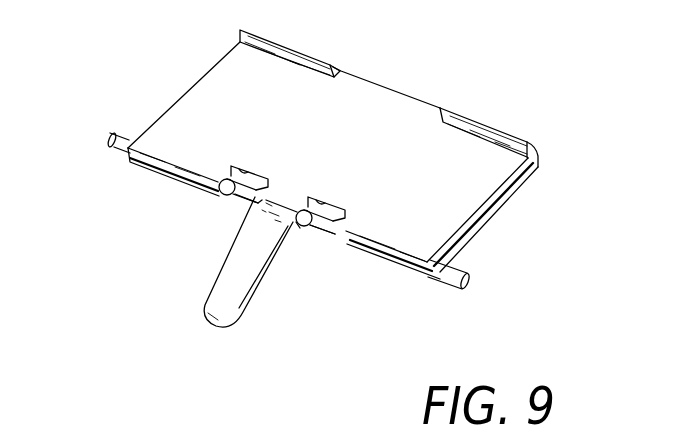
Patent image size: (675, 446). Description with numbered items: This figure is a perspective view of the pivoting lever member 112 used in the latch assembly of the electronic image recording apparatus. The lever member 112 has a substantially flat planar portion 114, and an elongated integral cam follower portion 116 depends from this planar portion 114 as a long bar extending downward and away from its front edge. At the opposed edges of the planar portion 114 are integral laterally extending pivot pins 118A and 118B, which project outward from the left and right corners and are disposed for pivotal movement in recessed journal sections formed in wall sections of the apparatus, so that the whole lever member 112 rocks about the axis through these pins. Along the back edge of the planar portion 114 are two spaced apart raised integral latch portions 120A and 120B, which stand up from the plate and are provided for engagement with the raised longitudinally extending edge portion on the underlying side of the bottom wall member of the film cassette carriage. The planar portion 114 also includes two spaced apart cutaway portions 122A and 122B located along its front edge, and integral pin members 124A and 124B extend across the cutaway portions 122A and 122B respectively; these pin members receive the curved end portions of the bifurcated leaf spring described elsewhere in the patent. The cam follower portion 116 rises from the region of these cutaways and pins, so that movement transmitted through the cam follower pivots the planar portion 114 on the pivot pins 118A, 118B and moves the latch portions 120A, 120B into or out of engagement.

The pivoting lever member 112 is at (190, 84).
The planar portion 114 is at (386, 174).
The cam follower portion 116 is at (227, 259).
The pivot pin 118A is at (112, 131).
The pivot pin 118B is at (473, 281).
The raised latch portion 120A is at (300, 53).
The raised latch portion 120B is at (497, 129).
The cutaway portion 122A is at (245, 174).
The cutaway portion 122B is at (322, 207).
The pin member 124A is at (247, 206).
The pin member 124B is at (318, 232).